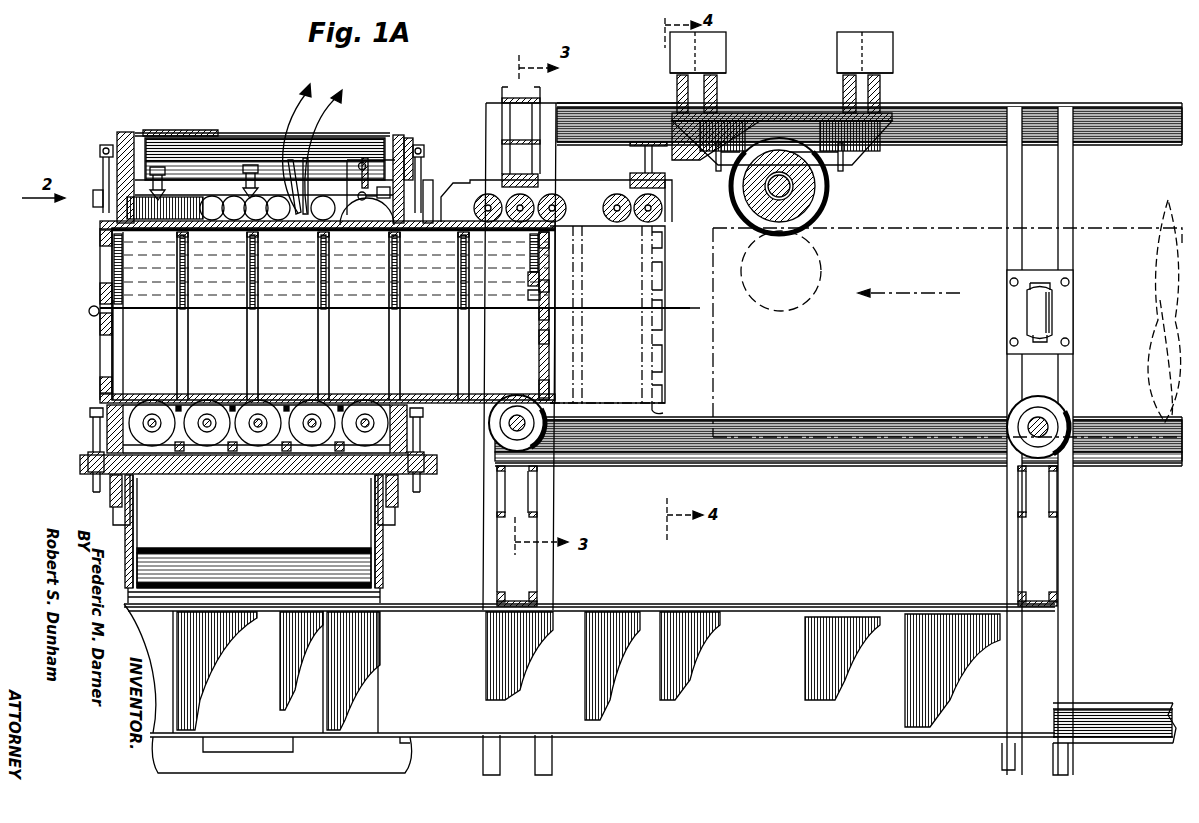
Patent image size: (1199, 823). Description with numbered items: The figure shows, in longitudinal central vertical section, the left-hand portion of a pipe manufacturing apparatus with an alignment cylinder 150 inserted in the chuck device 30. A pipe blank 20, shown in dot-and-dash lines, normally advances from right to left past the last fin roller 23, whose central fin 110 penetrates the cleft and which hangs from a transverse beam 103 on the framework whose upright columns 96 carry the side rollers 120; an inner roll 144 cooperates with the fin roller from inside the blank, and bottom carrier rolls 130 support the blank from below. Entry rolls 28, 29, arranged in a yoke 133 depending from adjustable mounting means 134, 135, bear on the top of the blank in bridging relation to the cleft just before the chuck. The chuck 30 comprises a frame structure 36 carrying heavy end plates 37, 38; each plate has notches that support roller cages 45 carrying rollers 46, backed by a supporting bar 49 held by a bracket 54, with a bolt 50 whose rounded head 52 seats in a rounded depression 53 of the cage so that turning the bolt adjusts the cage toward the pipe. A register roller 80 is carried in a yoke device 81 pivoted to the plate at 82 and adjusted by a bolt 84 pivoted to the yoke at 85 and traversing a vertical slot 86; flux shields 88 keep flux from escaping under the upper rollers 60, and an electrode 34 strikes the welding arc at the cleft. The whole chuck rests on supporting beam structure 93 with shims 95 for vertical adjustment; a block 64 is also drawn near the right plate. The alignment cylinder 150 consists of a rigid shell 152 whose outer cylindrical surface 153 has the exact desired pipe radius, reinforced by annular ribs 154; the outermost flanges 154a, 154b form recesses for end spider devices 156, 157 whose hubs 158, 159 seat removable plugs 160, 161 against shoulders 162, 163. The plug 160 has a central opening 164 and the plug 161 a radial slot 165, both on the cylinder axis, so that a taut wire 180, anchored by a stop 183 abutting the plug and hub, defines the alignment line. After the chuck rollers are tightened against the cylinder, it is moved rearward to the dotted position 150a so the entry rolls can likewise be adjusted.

The chuck device 30 is at (163, 116).
The frame structure 36 is at (150, 132).
The end plate 37 is at (118, 137).
The electrode 34 is at (313, 140).
The bolt 84 is at (364, 157).
The end plate 38 is at (400, 136).
The vertical slot 86 is at (413, 145).
The upright column 96 is at (486, 118).
The flux shield 88 is at (168, 200).
The rollers 60 is at (212, 196).
The rounded depression 53 is at (288, 163).
The pivot 85 is at (359, 164).
The yoke device 81 is at (346, 180).
The pivot axis 82 is at (360, 193).
The block 64 is at (430, 190).
The entry rolls 28 is at (480, 206).
The entry rolls 29 is at (608, 204).
The mounting means 134 is at (535, 178).
The yoke 133 is at (618, 184).
The mounting means 135 is at (668, 182).
The fin roller 23 is at (775, 160).
The fin 110 is at (818, 190).
The transverse beam 103 is at (893, 62).
The pipe blank 20 is at (945, 238).
The inner roll 144 is at (795, 290).
The side roller 120 is at (1030, 320).
The carrier roll 130 is at (1085, 444).
The alignment cylinder 150 is at (95, 253).
The end spider device 156 is at (100, 236).
The central hub 158 is at (100, 293).
The bar or stop 183 is at (88, 311).
The plug 160 is at (103, 320).
The outermost rib or flange 154a is at (120, 268).
The shoulder 162 is at (122, 294).
The central opening 164 is at (120, 318).
The outer cylindrical surface 153 is at (288, 232).
The annular ribs 154 is at (411, 285).
The register roller 80 is at (342, 232).
The wire 180 is at (355, 306).
The cylindrical shell 152 is at (133, 386).
The outermost rib or flange 154b is at (530, 260).
The shoulder 163 is at (528, 295).
The end spider device 157 is at (548, 236).
The central hub 159 is at (549, 288).
The slot 165 is at (549, 302).
The plug 161 is at (549, 322).
The dotted line position 150a is at (680, 410).
The rollers 46 is at (155, 398).
The rounded head 52 is at (80, 446).
The supporting bar 49 is at (430, 465).
The bolt 50 is at (425, 484).
The roller cage 45 is at (245, 450).
The bracket 54 is at (140, 480).
The shims 95 is at (378, 598).
The supporting beam structure 93 is at (414, 608).